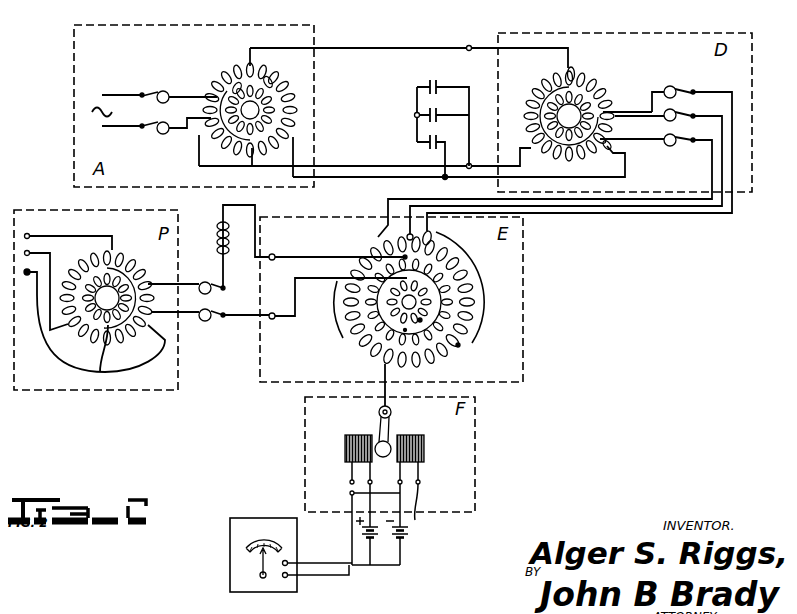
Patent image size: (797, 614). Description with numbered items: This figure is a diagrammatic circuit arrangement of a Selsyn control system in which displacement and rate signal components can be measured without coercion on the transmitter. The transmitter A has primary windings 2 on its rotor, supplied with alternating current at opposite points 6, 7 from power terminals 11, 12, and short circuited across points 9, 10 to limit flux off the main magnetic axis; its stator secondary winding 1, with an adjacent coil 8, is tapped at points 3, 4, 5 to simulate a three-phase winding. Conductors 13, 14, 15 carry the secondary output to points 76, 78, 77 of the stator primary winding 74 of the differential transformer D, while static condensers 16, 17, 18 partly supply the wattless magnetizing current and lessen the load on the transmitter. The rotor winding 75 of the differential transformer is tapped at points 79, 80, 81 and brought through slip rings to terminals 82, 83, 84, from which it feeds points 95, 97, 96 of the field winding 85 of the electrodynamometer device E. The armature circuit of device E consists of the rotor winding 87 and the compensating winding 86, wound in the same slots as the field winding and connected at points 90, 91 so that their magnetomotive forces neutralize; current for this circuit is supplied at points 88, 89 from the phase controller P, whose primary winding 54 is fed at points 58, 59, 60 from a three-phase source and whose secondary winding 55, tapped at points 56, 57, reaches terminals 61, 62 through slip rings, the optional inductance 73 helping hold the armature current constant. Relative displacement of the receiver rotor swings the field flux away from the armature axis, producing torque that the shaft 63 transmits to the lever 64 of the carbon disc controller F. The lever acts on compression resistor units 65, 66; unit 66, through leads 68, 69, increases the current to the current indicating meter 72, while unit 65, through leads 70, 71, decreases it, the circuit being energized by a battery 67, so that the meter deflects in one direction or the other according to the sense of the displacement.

The secondary winding 1 is at (290, 88).
The primary windings 2 is at (285, 101).
The tap point 3 is at (246, 62).
The tap point 4 is at (200, 136).
The tap point 5 is at (295, 137).
The connection point 6 is at (262, 167).
The connection point 7 is at (237, 86).
The stator coil 8 is at (270, 82).
The short circuit point 9 is at (272, 115).
The short circuit point 10 is at (215, 97).
The power terminal 11 is at (142, 93).
The power terminal 12 is at (142, 129).
The conductor 13 is at (377, 48).
The conductor 14 is at (355, 166).
The conductor 15 is at (377, 178).
The static condenser 16 is at (430, 84).
The static condenser 17 is at (440, 112).
The static condenser 18 is at (440, 137).
The primary winding 54 is at (85, 266).
The secondary winding 55 is at (150, 283).
The tap point 56 is at (140, 270).
The tap point 57 is at (111, 357).
The supply point 58 is at (114, 248).
The supply point 59 is at (68, 326).
The supply point 60 is at (148, 328).
The terminal 61 is at (226, 290).
The terminal 62 is at (224, 318).
The shaft 63 is at (390, 389).
The lever 64 is at (392, 436).
The compression resistor unit 65 is at (420, 448).
The compression resistor unit 66 is at (348, 449).
The battery 67 is at (396, 542).
The lead 68 is at (350, 484).
The lead 69 is at (350, 494).
The lead 70 is at (417, 522).
The lead 71 is at (421, 483).
The current indicating meter 72 is at (242, 556).
The inductance 73 is at (232, 232).
The primary winding 74 is at (588, 83).
The rotor winding 75 is at (604, 110).
The connection point 76 is at (573, 67).
The connection point 77 is at (609, 146).
The connection point 78 is at (530, 149).
The tap point 79 is at (590, 100).
The tap point 80 is at (592, 128).
The tap point 81 is at (540, 128).
The terminal 82 is at (696, 91).
The terminal 83 is at (696, 115).
The terminal 84 is at (693, 143).
The field winding 85 is at (455, 262).
The compensating winding 86 is at (442, 292).
The rotor winding 87 is at (430, 305).
The supply point 88 is at (405, 262).
The supply point 89 is at (397, 306).
The connection point 90 is at (428, 320).
The connection point 91 is at (405, 330).
The connection point 95 is at (415, 241).
The connection point 96 is at (355, 345).
The connection point 97 is at (458, 346).